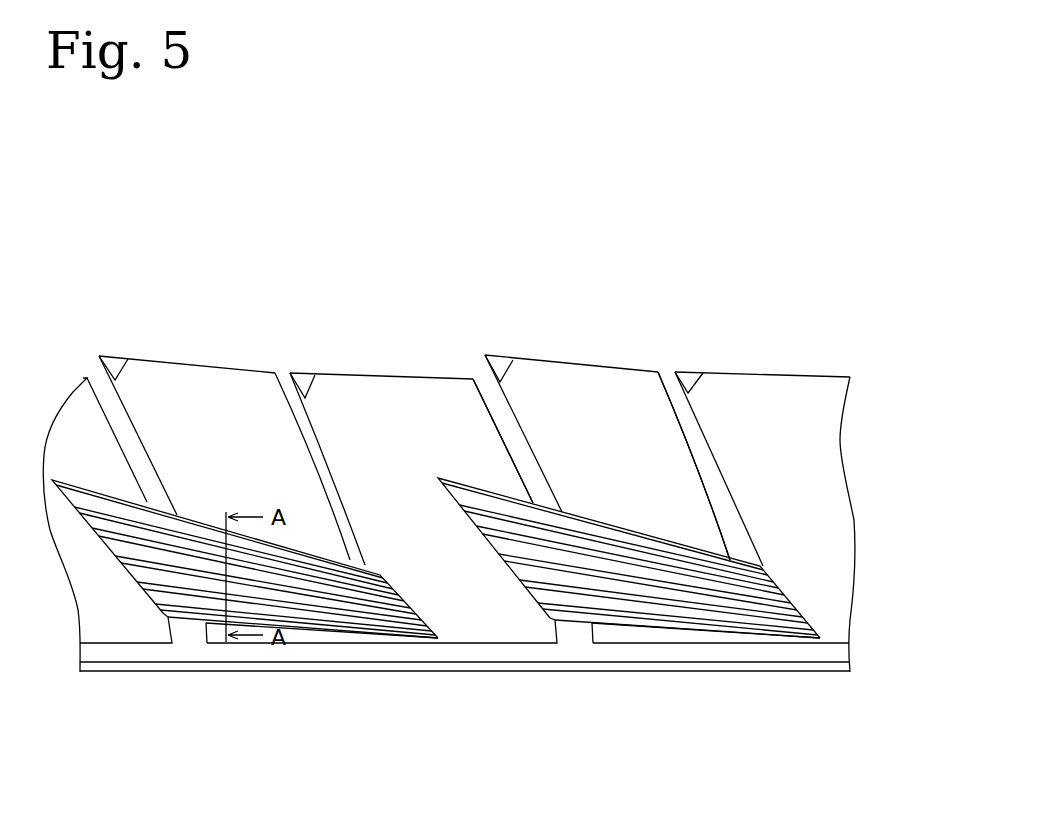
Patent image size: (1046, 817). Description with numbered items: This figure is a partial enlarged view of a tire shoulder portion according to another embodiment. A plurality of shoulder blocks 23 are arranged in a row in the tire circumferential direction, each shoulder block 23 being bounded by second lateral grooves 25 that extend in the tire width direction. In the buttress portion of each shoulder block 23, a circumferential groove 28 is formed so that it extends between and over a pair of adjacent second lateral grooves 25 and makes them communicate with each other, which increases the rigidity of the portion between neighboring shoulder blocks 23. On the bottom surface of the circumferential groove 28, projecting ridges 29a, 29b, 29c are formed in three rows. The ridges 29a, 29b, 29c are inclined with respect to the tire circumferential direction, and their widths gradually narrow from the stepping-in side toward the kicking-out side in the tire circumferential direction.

The shoulder block 23 is at (615, 437).
The second lateral groove 25 is at (525, 453).
The circumferential groove 28 is at (343, 628).
The ridge 29a is at (390, 628).
The ridge 29b is at (362, 598).
The ridge 29c is at (318, 566).